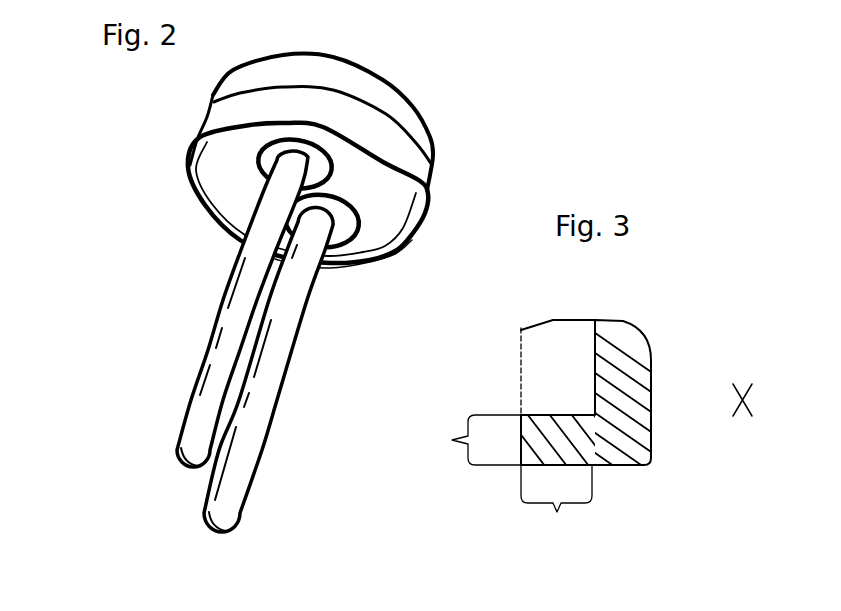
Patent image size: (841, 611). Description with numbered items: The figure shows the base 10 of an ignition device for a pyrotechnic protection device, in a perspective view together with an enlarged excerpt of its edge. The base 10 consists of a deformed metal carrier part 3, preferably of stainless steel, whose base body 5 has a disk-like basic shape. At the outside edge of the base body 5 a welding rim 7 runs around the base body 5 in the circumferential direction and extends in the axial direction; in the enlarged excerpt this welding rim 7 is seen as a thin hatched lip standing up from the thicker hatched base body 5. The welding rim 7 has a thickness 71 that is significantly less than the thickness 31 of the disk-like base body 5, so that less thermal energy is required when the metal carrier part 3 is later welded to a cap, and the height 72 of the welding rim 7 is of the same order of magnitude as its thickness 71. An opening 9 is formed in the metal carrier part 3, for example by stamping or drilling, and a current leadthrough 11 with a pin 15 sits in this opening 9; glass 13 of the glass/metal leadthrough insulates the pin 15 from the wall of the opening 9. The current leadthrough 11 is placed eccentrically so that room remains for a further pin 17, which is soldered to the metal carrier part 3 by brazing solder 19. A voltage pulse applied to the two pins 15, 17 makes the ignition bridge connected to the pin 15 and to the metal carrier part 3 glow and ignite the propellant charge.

In FIG. 2, the metal carrier part 3 is at (412, 98).
In FIG. 3, the metal carrier part 3 is at (607, 378).
In FIG. 2, the base body 5 is at (372, 200).
In FIG. 2, the welding rim 7 is at (194, 192).
In FIG. 3, the welding rim 7 is at (531, 448).
In FIG. 2, the opening 9 is at (288, 145).
In FIG. 2, the base 10 is at (82, 300).
In FIG. 2, the current leadthrough 11 is at (241, 152).
In FIG. 2, the glass 13 is at (272, 160).
In FIG. 2, the pin 15 is at (188, 414).
In FIG. 2, the further pin 17 is at (265, 451).
In FIG. 2, the brazing solder 19 is at (343, 228).
In FIG. 2, the thickness of the base body 31 is at (681, 16).
In FIG. 3, the thickness of the welding rim 71 is at (469, 440).
In FIG. 3, the height of the welding rim 72 is at (556, 509).